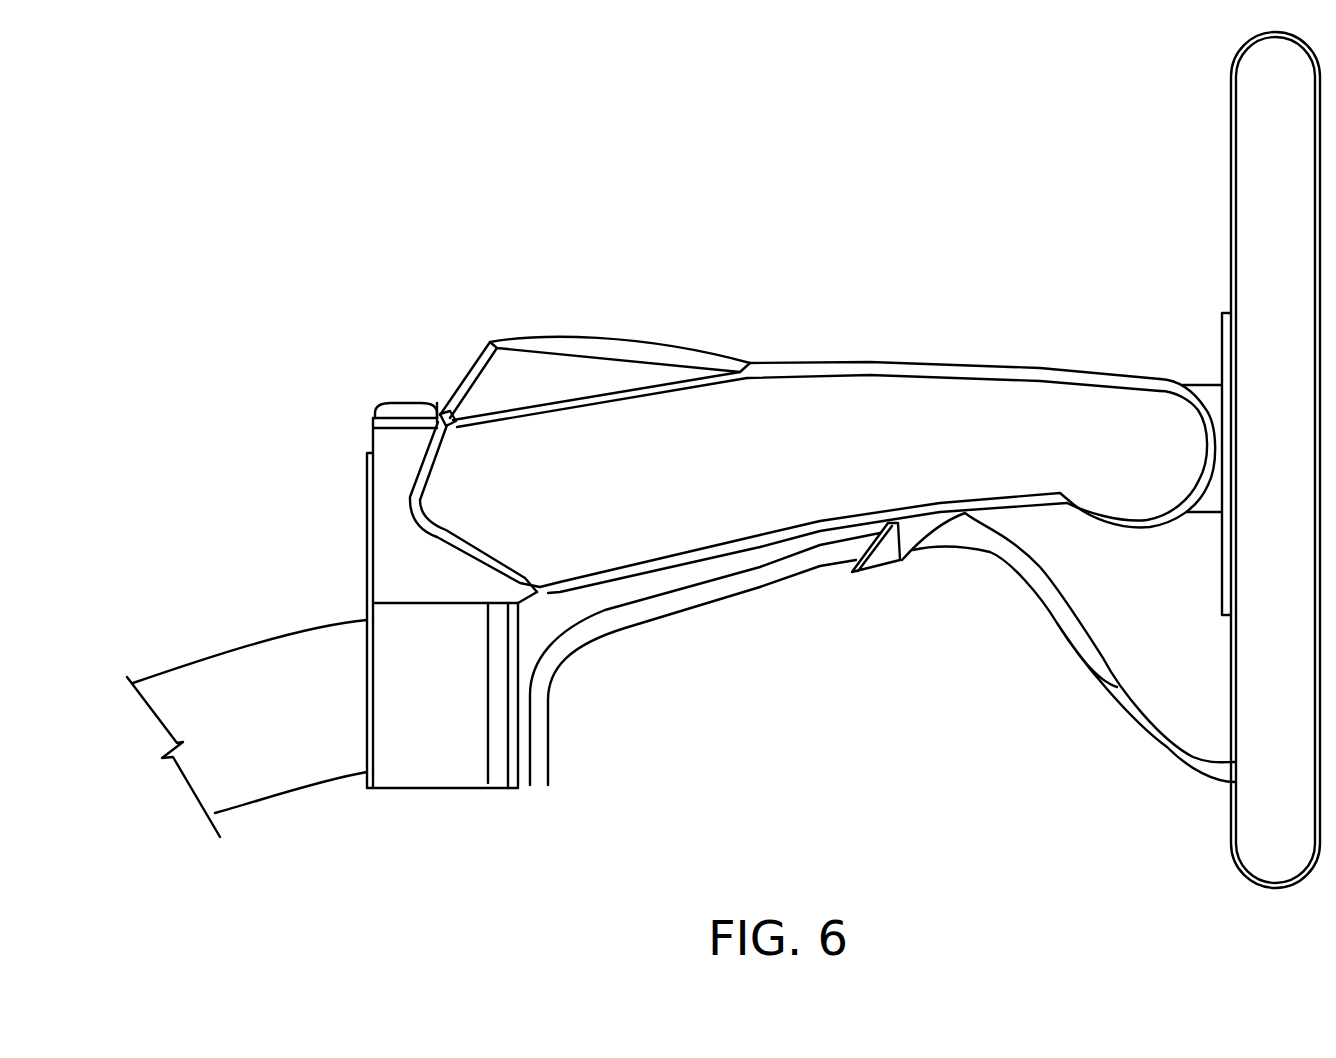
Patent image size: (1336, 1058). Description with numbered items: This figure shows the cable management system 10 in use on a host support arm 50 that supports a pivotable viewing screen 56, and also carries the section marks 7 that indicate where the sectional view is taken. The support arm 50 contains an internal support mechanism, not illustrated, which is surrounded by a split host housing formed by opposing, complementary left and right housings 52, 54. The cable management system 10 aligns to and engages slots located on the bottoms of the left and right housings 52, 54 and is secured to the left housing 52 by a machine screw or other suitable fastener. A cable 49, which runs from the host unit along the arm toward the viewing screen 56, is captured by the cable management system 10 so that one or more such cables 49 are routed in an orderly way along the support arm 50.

The section line 7- 7 is at (887, 566).
The cable management system 10 is at (905, 568).
The cable 49 is at (693, 595).
The support arm 50 is at (837, 342).
The left housing 52 is at (845, 407).
The right housing 54 is at (928, 414).
The pivotable viewing screen 56 is at (1231, 212).